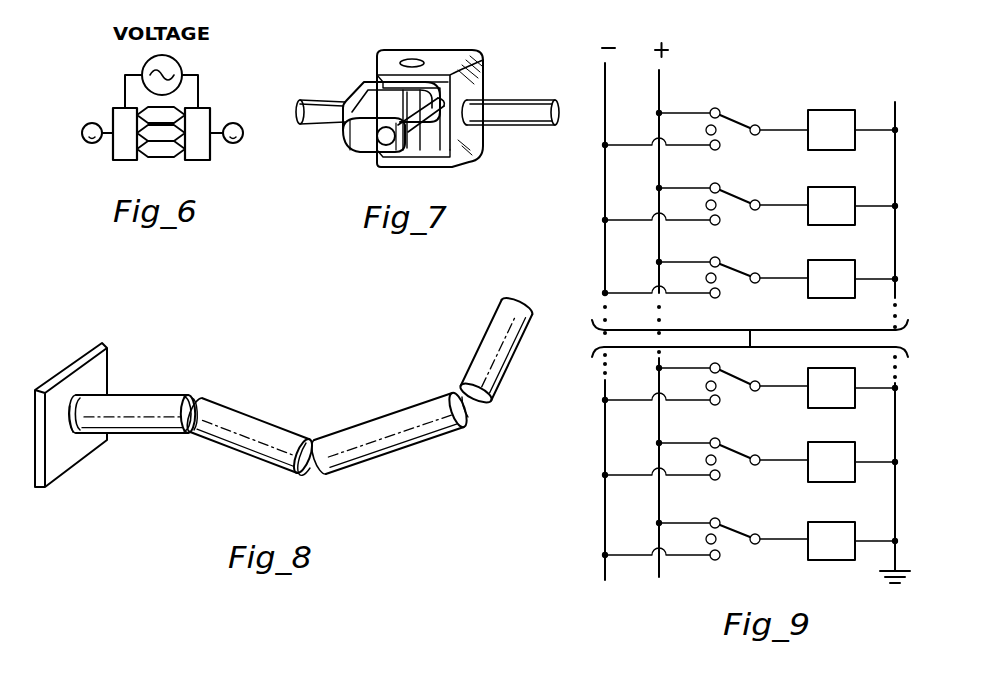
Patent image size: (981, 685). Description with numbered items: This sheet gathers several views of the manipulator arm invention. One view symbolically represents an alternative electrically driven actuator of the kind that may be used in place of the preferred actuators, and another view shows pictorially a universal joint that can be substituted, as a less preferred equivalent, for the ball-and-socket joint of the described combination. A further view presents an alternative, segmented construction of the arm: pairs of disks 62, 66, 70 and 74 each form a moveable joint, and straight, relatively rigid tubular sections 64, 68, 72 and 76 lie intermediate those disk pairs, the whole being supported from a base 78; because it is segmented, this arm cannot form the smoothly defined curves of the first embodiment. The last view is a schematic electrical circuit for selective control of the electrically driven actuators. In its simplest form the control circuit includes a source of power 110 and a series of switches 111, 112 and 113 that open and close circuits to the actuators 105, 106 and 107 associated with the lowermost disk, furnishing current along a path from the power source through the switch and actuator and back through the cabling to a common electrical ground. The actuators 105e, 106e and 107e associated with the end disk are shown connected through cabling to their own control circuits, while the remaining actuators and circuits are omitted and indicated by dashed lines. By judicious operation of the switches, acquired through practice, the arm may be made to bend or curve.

In FIG. 8, the disk pair 62 is at (73, 432).
In FIG. 8, the tubular section 64 is at (143, 395).
In FIG. 8, the disk pair 66 is at (192, 432).
In FIG. 8, the tubular section 68 is at (268, 420).
In FIG. 8, the disk pair 70 is at (310, 468).
In FIG. 8, the tubular section 72 is at (382, 416).
In FIG. 8, the disk pair 74 is at (468, 417).
In FIG. 8, the tubular section 76 is at (474, 350).
In FIG. 8, the base 78 is at (70, 367).
In FIG. 9, the source of power 110 is at (655, 95).
In FIG. 9, the switch 111 is at (740, 120).
In FIG. 9, the switch 112 is at (728, 176).
In FIG. 9, the switch 113 is at (727, 252).
In FIG. 9, the actuator 105 is at (819, 93).
In FIG. 9, the actuator 106 is at (818, 167).
In FIG. 9, the actuator 107 is at (817, 243).
In FIG. 9, the actuator 105e is at (807, 378).
In FIG. 9, the actuator 106e is at (807, 445).
In FIG. 9, the actuator 107e is at (807, 524).